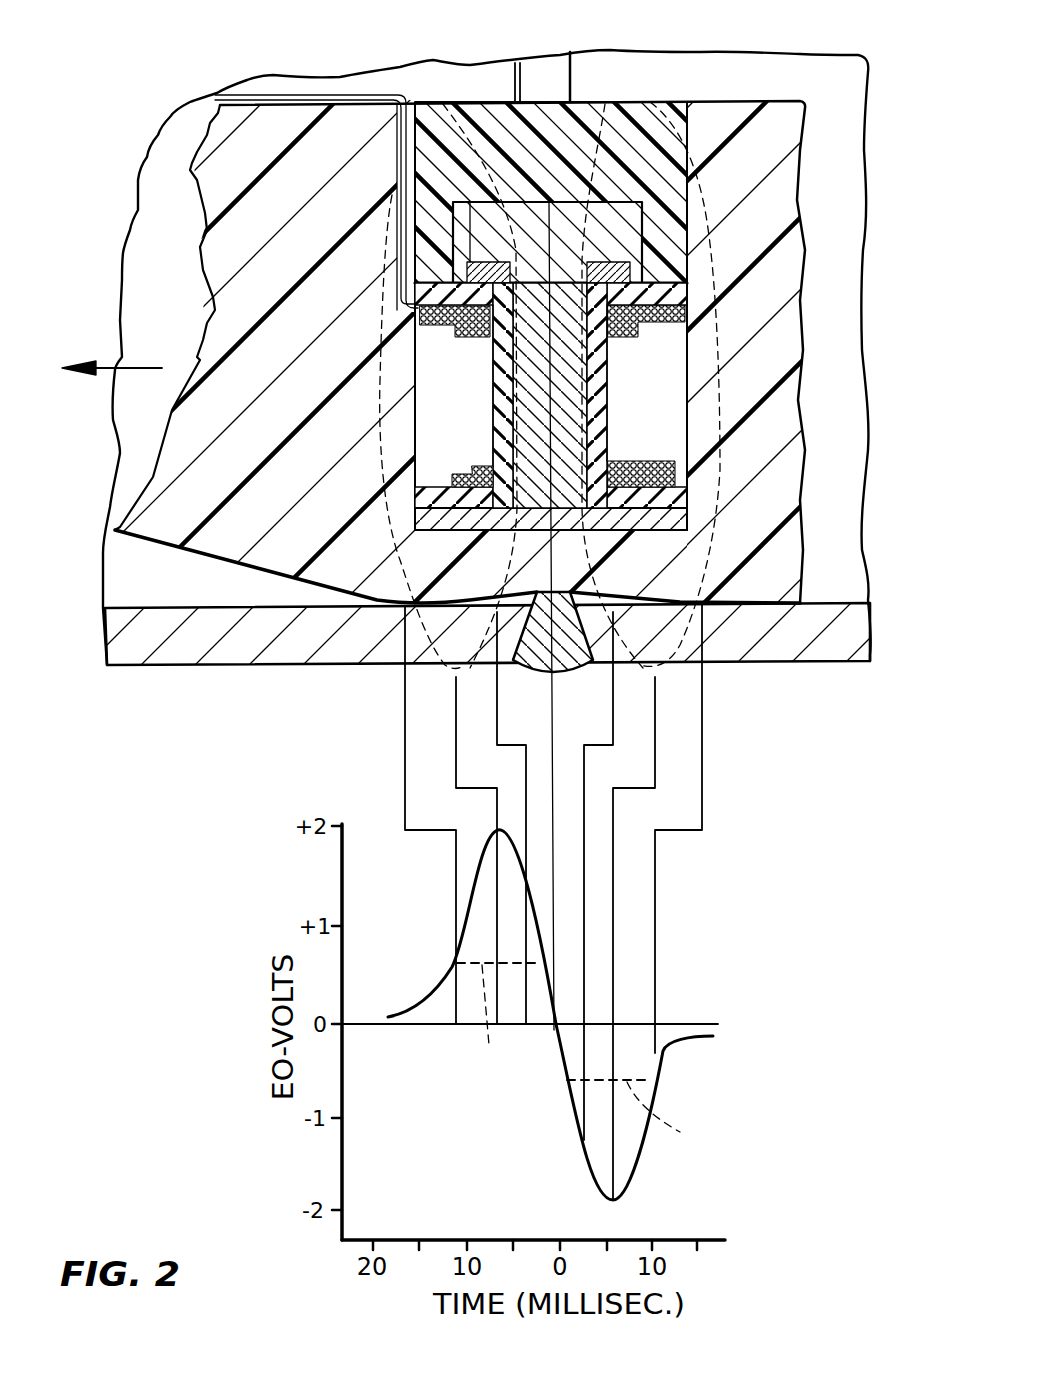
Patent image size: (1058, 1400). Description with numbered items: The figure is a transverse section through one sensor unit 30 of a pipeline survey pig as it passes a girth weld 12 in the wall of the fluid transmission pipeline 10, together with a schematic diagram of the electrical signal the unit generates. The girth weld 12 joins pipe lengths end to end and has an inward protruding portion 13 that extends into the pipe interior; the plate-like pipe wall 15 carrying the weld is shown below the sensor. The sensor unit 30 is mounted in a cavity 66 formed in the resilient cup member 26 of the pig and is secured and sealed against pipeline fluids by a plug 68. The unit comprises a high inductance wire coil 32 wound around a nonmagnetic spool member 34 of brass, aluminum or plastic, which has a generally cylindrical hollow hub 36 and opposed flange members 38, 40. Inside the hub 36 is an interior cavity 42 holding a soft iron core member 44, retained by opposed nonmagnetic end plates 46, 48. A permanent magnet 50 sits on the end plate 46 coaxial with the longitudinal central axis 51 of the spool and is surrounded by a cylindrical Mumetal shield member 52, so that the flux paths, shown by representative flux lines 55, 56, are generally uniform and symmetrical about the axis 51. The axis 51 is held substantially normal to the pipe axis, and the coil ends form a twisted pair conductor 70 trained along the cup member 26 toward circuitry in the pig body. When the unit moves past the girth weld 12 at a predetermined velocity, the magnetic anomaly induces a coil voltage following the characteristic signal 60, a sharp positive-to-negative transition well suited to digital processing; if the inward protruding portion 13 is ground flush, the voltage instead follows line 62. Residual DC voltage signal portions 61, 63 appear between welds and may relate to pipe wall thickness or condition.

The fluid transmission pipeline 10 is at (866, 65).
The girth weld 12 is at (573, 668).
The inward protruding portion 13 is at (583, 587).
The workpiece plate 15 is at (248, 610).
The cup member 26 is at (803, 267).
The sensor unit 30 is at (413, 370).
The wire coil 32 is at (690, 360).
The spool member 34 is at (693, 470).
The hub 36 is at (612, 398).
The flange member 38 is at (640, 268).
The flange member 40 is at (687, 535).
The interior cavity 42 is at (578, 370).
The core member 44 is at (508, 382).
The end plate 46 is at (510, 264).
The end plate 48 is at (438, 483).
The permanent magnet 50 is at (603, 108).
The longitudinal central axis 51 is at (516, 67).
The Mumetal shield member 52 is at (688, 201).
The flux line 55 is at (377, 453).
The flux line 56 is at (722, 322).
The induced voltage characteristic signal 60 is at (572, 1100).
The residual DC voltage signal portion 61 is at (440, 993).
The voltage characteristic line 62 is at (590, 1058).
The residual DC voltage signal portion 63 is at (697, 1042).
The cavity 66 is at (677, 108).
The plug 68 is at (553, 108).
The twisted pair conductor 70 is at (402, 66).